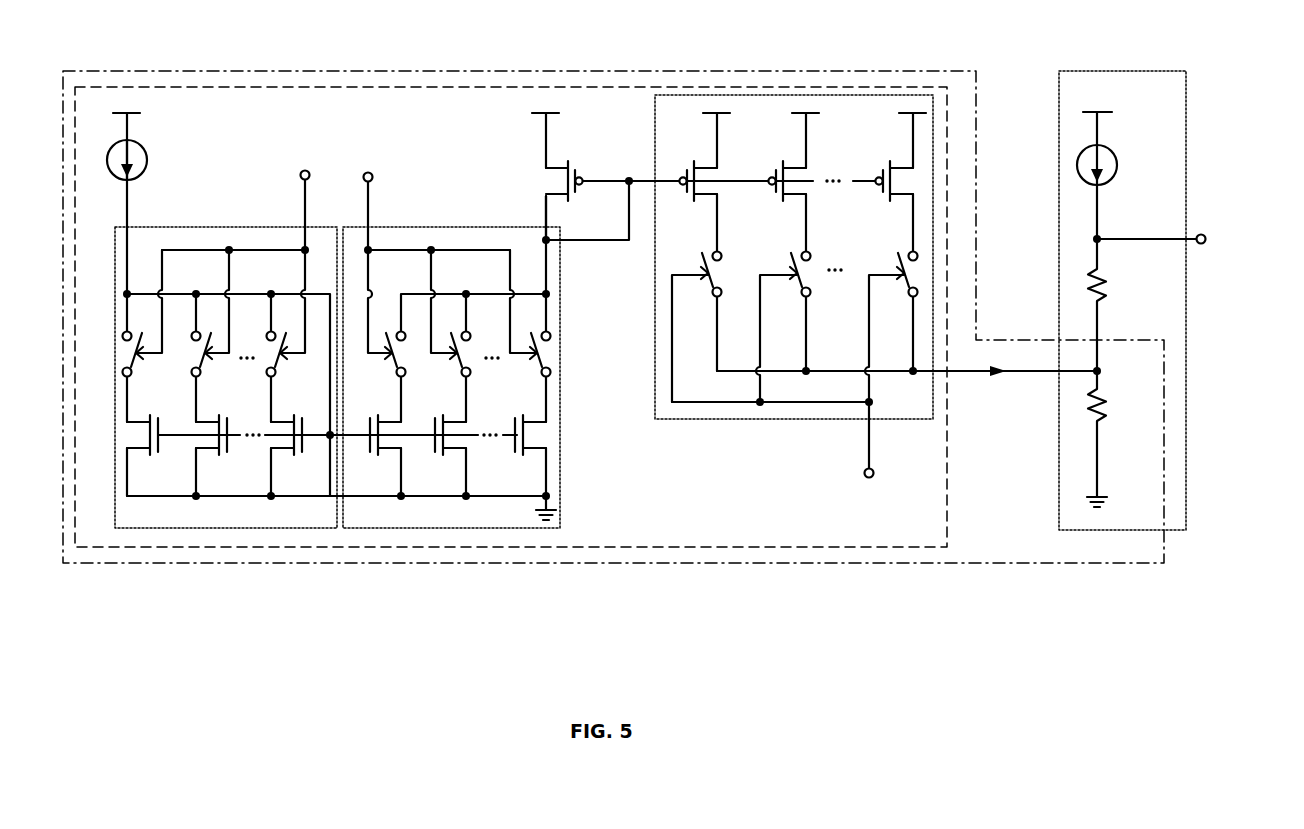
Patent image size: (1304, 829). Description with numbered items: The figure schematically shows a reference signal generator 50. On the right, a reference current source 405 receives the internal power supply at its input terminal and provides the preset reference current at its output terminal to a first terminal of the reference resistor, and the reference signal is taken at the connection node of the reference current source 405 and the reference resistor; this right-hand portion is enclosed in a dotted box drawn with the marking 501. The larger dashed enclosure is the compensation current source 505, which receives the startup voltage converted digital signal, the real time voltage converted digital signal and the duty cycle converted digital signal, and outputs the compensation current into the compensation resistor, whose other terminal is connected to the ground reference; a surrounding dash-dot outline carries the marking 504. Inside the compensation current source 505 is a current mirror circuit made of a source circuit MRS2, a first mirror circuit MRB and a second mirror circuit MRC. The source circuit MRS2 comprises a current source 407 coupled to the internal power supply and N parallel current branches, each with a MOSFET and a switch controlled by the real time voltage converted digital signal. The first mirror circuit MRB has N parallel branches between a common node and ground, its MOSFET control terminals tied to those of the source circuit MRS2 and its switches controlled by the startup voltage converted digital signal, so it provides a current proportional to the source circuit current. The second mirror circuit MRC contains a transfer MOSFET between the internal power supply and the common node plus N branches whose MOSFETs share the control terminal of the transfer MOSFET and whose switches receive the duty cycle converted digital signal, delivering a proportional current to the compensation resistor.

The reference signal generator 50 is at (675, 317).
The reference current generator 501 is at (1186, 417).
The current regulating circuit 504 is at (976, 212).
The compensation current source 505 is at (950, 482).
The reference current source 405 is at (1121, 165).
The current source 407 is at (147, 170).
The source circuit MRS2 is at (245, 207).
The first mirror circuit MRB is at (562, 473).
The second mirror circuit MRC is at (769, 420).